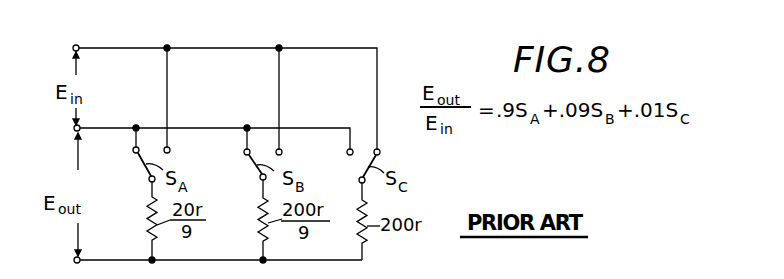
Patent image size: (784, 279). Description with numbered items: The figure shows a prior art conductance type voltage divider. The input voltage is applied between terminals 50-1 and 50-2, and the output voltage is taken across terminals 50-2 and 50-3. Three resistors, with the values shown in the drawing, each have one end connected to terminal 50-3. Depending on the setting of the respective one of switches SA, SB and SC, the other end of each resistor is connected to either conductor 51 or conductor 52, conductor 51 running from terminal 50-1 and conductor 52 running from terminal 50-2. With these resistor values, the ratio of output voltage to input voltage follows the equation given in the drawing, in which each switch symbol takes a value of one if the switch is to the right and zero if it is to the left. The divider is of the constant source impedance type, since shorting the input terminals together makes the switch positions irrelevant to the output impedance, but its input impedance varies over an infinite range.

The terminal 50-1 is at (82, 37).
The terminal 50-2 is at (75, 131).
The terminal 50-3 is at (74, 260).
The conductor 51 is at (212, 38).
The conductor 52 is at (216, 117).